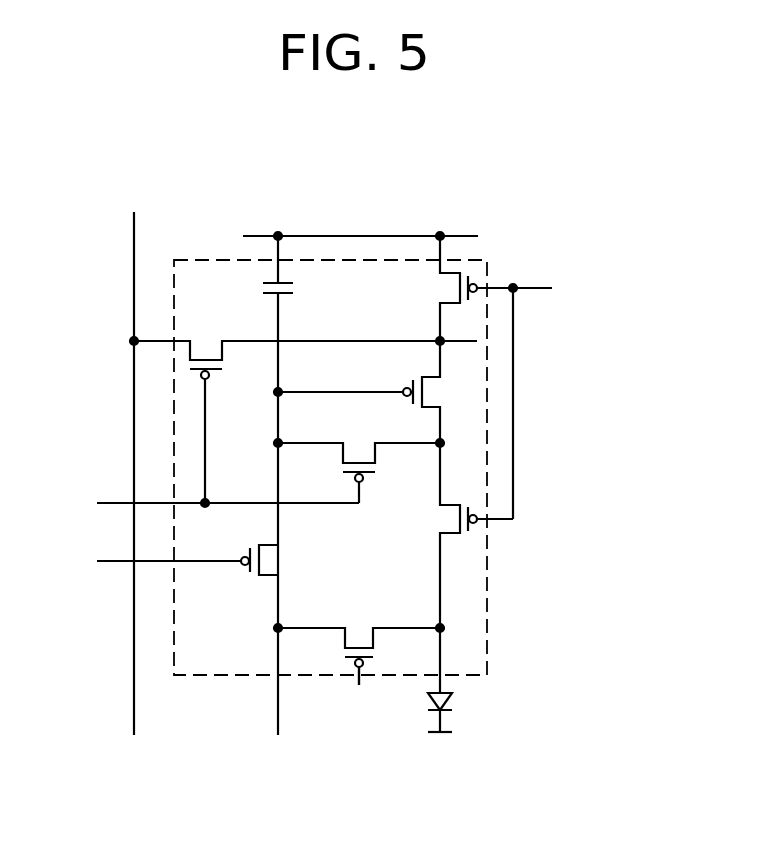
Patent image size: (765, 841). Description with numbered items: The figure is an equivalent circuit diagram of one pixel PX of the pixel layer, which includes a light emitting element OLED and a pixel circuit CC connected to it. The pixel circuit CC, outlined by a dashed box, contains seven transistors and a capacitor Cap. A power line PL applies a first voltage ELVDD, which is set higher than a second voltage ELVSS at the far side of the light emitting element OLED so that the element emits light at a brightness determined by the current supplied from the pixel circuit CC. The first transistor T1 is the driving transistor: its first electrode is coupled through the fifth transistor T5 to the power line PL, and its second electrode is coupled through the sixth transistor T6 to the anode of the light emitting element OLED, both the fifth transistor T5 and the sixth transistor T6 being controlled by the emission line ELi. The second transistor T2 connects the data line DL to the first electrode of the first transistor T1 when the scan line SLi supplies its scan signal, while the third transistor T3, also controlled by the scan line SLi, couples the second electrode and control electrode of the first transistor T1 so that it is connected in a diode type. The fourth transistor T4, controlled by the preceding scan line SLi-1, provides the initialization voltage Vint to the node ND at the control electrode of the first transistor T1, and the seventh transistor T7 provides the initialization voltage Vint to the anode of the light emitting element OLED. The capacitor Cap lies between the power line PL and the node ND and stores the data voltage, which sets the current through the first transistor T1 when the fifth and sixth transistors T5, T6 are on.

The pixel PX is at (558, 184).
The pixel circuit CC is at (488, 567).
The data line DL is at (133, 460).
The first voltage ELVDD is at (360, 219).
The power line PL is at (390, 237).
The capacitor Cap is at (302, 314).
The first transistor T1 is at (437, 392).
The second transistor T2 is at (303, 406).
The third transistor T3 is at (359, 510).
The fourth transistor T4 is at (275, 560).
The fifth transistor T5 is at (482, 288).
The sixth transistor T6 is at (463, 535).
The seventh transistor T7 is at (359, 641).
The node ND is at (325, 392).
The i-th emission line ELi is at (550, 396).
The i-th scan line SLi is at (205, 503).
The (i-1)-th scan line SLi-1 is at (133, 561).
The initialization voltage Vint is at (276, 695).
The light emitting element OLED is at (452, 700).
The second voltage ELVSS is at (440, 748).